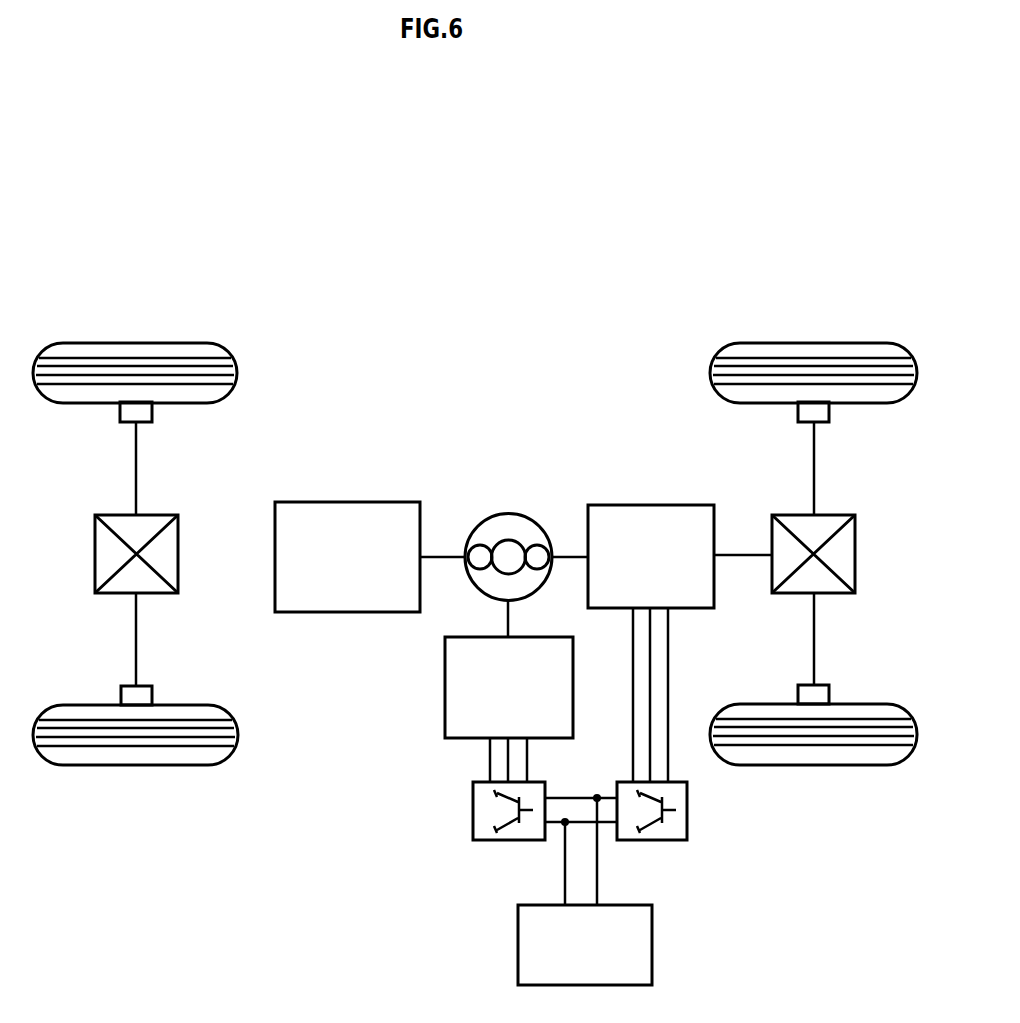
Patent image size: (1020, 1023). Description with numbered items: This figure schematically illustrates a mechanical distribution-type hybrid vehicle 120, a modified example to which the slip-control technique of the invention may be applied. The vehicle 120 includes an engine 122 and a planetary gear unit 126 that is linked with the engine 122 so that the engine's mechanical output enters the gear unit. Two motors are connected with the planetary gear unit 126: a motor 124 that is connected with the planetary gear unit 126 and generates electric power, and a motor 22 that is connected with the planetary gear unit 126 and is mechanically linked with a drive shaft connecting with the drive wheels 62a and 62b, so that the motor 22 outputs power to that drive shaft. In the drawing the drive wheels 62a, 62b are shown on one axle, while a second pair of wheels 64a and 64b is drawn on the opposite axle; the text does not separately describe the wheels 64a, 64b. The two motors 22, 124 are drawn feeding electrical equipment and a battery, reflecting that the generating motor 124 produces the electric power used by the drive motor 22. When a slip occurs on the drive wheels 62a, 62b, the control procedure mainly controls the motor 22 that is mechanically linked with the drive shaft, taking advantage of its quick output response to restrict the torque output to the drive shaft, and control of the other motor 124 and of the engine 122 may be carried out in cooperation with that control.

The mechanical distribution-type hybrid vehicle 120 is at (547, 263).
The engine 122 is at (348, 502).
The planetary gear unit 126 is at (508, 513).
The motor 22 is at (650, 505).
The motor 124 is at (445, 687).
The drive wheel 62a is at (815, 343).
The drive wheel 62b is at (815, 765).
The front wheel 64a is at (137, 343).
The front wheel 64b is at (137, 765).